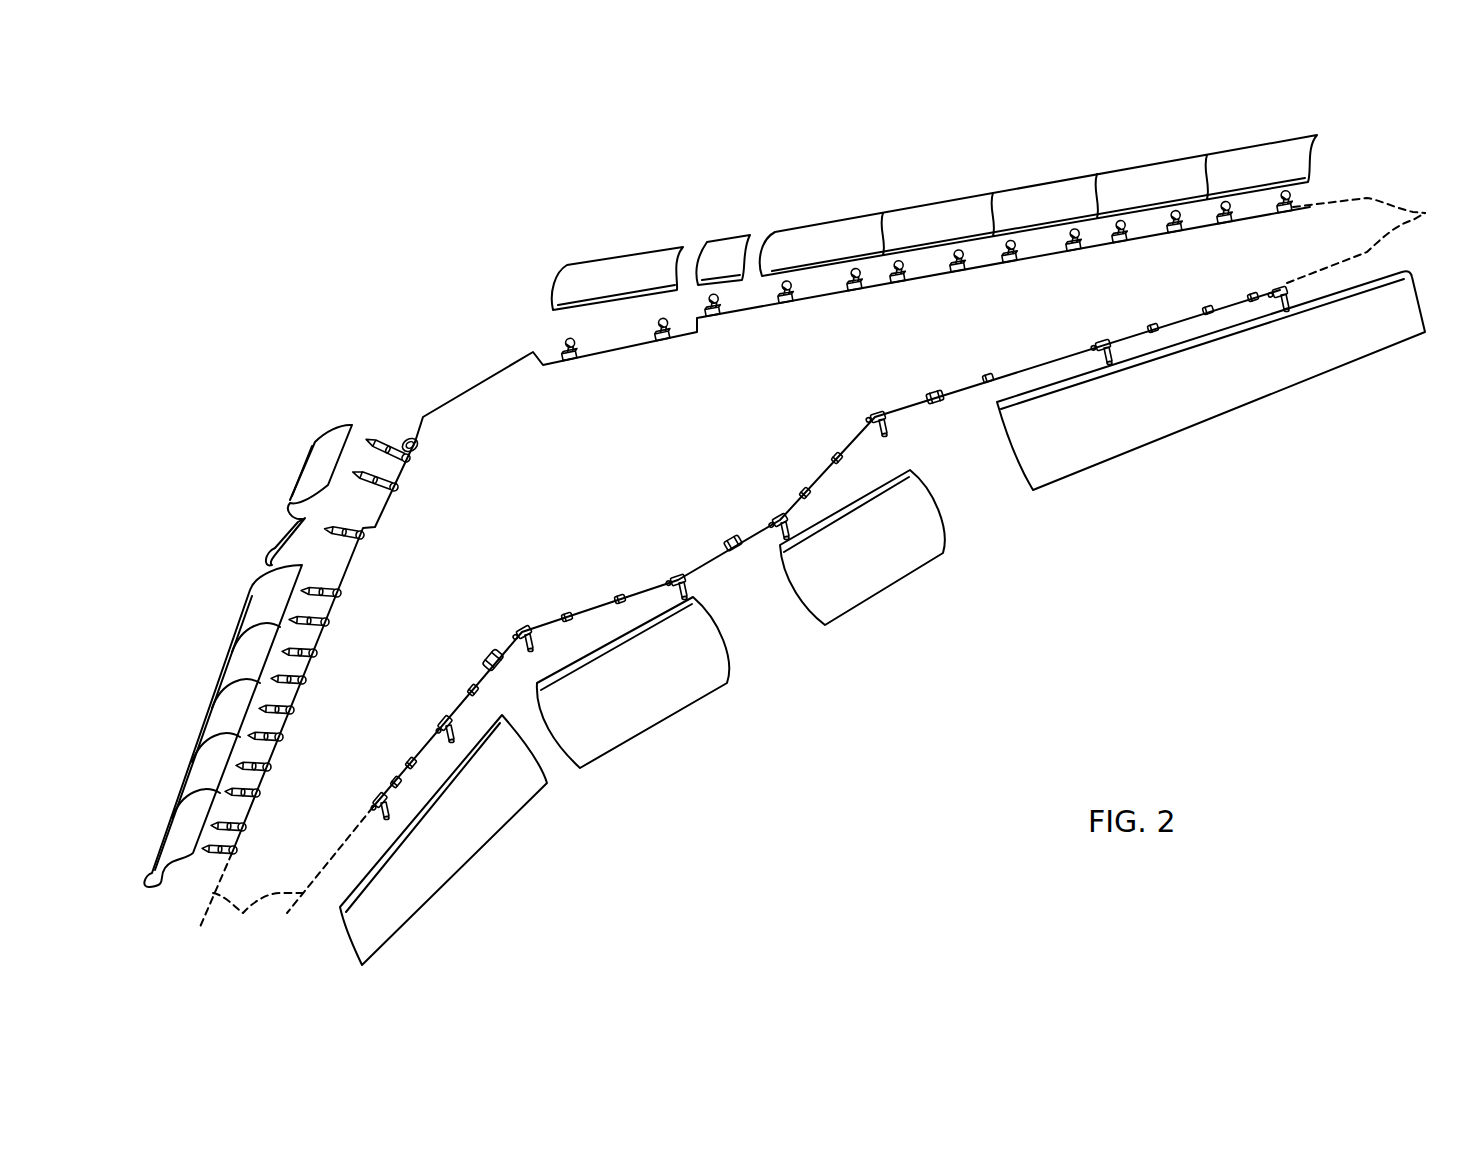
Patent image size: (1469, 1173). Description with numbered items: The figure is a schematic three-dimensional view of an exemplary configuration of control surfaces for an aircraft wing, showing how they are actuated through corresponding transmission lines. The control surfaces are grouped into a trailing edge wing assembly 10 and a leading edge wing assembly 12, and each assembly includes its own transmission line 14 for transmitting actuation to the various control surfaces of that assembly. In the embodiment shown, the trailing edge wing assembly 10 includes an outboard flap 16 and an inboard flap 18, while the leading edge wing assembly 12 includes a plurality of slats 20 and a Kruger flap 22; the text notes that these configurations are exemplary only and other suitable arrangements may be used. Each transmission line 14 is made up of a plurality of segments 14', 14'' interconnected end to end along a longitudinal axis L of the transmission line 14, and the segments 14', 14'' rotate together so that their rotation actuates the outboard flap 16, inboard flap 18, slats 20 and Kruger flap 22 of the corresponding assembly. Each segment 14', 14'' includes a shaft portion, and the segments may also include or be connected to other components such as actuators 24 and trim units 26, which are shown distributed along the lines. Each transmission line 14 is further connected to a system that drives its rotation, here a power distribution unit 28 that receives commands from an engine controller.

The trailing edge wing assembly 10 is at (1424, 364).
The leading edge wing assembly 12 is at (1338, 157).
The transmission line 14 is at (774, 567).
The segment 14' is at (756, 430).
The segment 14'' is at (947, 396).
The outboard flap 16 is at (1236, 416).
The inboard flap 18 is at (891, 603).
The slat 20 is at (623, 246).
The Kruger flap 22 is at (730, 231).
The actuator 24 is at (897, 426).
The trim unit 26 is at (506, 676).
The power distribution unit 28 is at (746, 560).
The longitudinal axis L is at (827, 570).